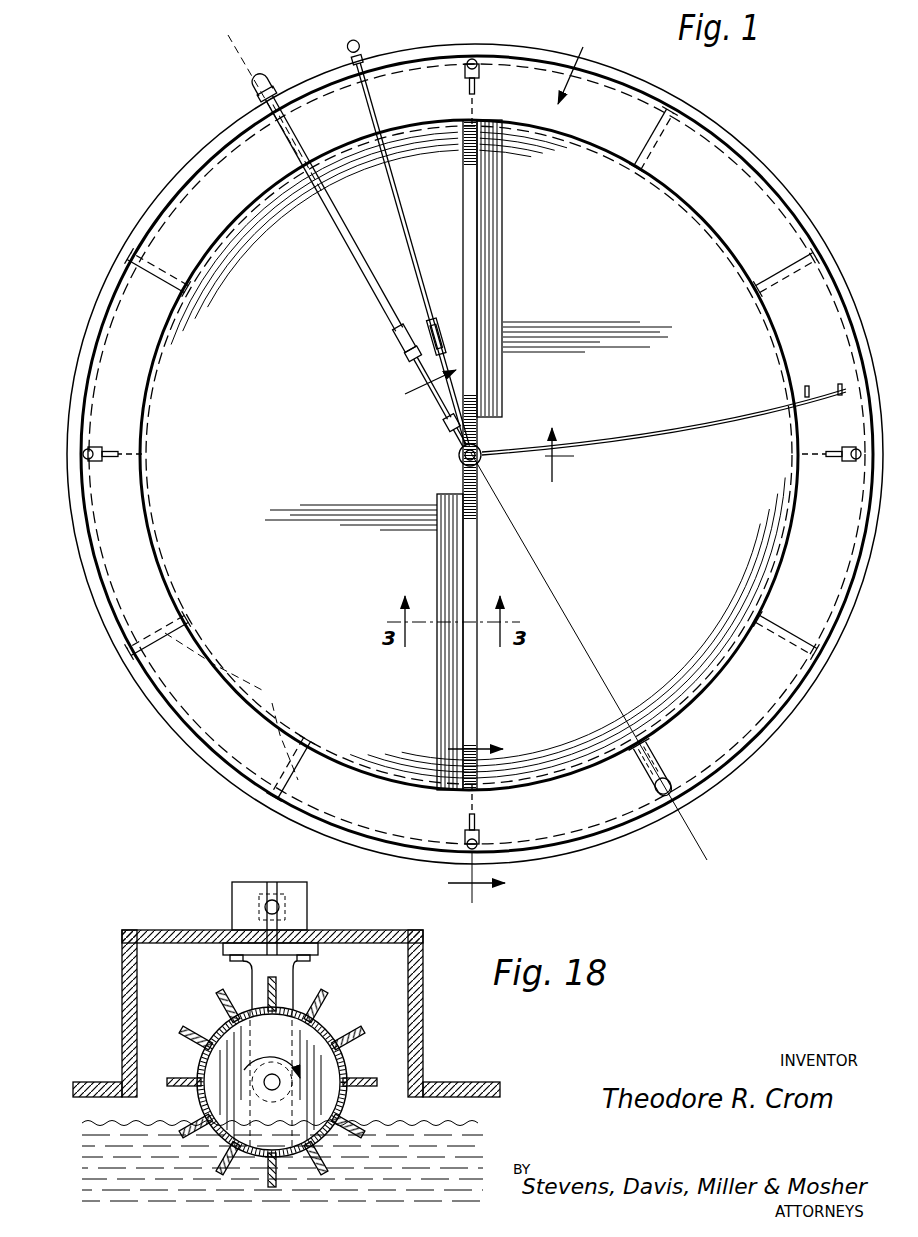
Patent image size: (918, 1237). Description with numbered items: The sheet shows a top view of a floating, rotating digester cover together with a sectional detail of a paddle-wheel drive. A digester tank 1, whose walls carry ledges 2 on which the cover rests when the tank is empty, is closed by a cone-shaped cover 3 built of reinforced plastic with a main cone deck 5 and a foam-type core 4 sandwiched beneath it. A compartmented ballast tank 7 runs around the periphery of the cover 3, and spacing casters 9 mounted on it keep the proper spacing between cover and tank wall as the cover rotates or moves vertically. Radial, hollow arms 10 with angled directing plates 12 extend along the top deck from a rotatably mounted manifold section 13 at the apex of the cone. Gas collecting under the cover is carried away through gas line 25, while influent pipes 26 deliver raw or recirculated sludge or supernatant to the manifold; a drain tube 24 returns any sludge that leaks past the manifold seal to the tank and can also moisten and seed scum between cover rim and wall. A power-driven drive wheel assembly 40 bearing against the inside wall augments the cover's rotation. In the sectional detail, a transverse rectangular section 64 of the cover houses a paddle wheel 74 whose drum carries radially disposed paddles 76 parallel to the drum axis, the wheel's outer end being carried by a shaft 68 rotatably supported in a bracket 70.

In FIG. 1, the digester tank 1 is at (746, 160).
In FIG. 1, the ledges 2 is at (263, 18).
In FIG. 1, the cover 3 is at (648, 366).
In FIG. 1, the foam-type core 4 is at (474, 817).
In FIG. 1, the main cone deck 5 is at (480, 428).
In FIG. 1, the ballast tank 7 is at (378, 402).
In FIG. 1, the spacing casters 9 is at (480, 60).
In FIG. 18, the spacing casters 9 is at (257, 892).
In FIG. 1, the radial hollow arms 10 is at (465, 213).
In FIG. 1, the angled directing plates 12 is at (497, 228).
In FIG. 1, the manifold section 13 is at (458, 458).
In FIG. 1, the drain tube 24 is at (699, 422).
In FIG. 1, the gas line 25 is at (393, 180).
In FIG. 1, the influent pipes 26 is at (366, 280).
In FIG. 1, the drive wheel assembly 40 is at (664, 770).
In FIG. 18, the transverse rectangular section 64 is at (352, 958).
In FIG. 18, the shafts 68 is at (272, 1090).
In FIG. 18, the brackets 70 is at (286, 989).
In FIG. 18, the paddle wheel 74 is at (332, 1019).
In FIG. 18, the paddles 76 is at (358, 1037).